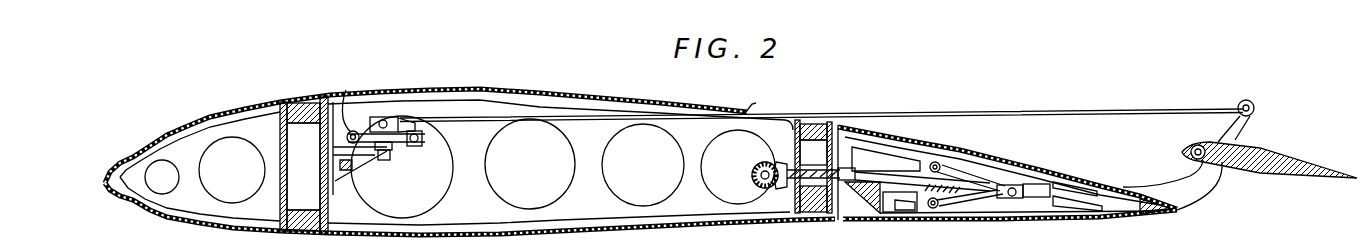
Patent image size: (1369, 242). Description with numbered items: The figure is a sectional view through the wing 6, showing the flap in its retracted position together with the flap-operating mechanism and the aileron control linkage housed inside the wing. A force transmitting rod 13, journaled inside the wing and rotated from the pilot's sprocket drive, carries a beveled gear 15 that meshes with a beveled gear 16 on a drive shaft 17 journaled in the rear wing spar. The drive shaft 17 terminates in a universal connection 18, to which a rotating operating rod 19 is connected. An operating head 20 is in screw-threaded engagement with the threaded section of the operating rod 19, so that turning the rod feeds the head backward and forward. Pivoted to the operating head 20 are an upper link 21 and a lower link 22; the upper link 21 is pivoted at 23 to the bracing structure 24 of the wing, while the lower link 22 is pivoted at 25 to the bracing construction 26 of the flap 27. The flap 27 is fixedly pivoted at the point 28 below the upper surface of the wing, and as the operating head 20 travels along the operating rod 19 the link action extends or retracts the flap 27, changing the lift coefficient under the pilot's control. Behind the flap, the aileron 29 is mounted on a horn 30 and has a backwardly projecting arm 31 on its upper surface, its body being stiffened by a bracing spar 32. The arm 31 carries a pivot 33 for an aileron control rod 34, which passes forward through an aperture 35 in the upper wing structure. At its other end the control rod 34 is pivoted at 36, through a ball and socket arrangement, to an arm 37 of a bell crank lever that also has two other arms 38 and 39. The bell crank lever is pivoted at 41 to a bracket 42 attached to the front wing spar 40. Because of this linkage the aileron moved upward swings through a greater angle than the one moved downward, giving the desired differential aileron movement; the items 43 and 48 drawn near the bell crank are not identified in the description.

The wing 6 is at (592, 96).
The force transmitting rod 13 is at (755, 182).
The beveled gear 15 is at (755, 172).
The beveled gear 16 is at (776, 170).
The drive shaft 17 is at (813, 172).
The universal connection 18 is at (852, 165).
The operating rod 19 is at (893, 177).
The operating head 20 is at (1030, 185).
The upper link 21 is at (962, 173).
The lower link 22 is at (962, 205).
The pivot 23 is at (938, 162).
The bracing structure 24 is at (996, 172).
The pivot 25 is at (930, 208).
The bracing construction 26 is at (886, 185).
The flap 27 is at (1102, 223).
The pivot point 28 is at (845, 182).
The aileron 29 is at (1288, 181).
The horn 30 is at (1218, 194).
The arm 31 is at (1241, 134).
The bracing spar 32 is at (1192, 160).
The pivot 33 is at (1255, 104).
The aileron control rod 34 is at (1127, 110).
The aperture 35 is at (752, 103).
The pivot 36 is at (385, 118).
The arm 37 is at (383, 160).
The arm 38 is at (355, 131).
The arm 39 is at (408, 146).
The front wing spar 40 is at (282, 167).
The pivot 41 is at (392, 147).
The bracket 42 is at (345, 182).
The spring cable 43 is at (343, 101).
The bolt 48 is at (418, 132).